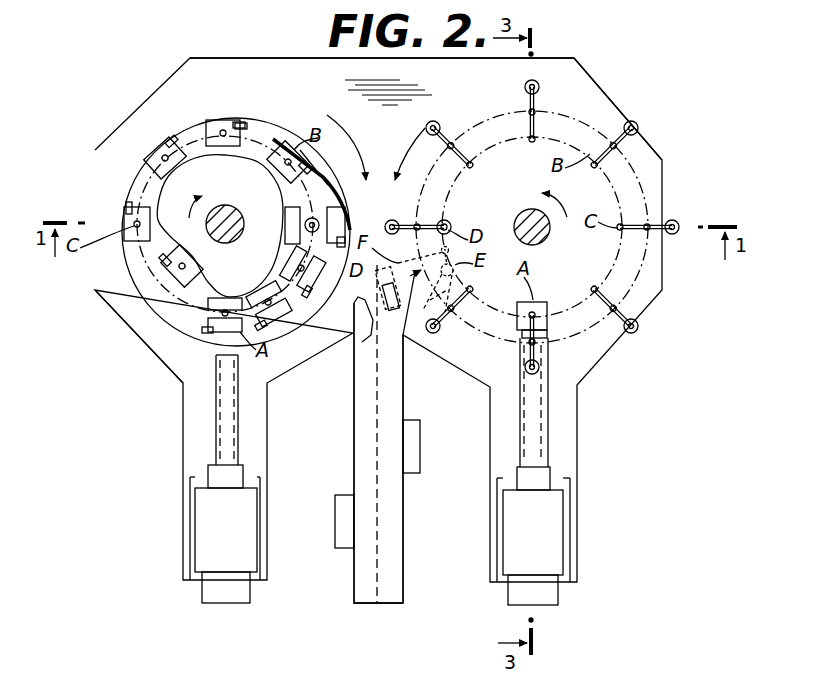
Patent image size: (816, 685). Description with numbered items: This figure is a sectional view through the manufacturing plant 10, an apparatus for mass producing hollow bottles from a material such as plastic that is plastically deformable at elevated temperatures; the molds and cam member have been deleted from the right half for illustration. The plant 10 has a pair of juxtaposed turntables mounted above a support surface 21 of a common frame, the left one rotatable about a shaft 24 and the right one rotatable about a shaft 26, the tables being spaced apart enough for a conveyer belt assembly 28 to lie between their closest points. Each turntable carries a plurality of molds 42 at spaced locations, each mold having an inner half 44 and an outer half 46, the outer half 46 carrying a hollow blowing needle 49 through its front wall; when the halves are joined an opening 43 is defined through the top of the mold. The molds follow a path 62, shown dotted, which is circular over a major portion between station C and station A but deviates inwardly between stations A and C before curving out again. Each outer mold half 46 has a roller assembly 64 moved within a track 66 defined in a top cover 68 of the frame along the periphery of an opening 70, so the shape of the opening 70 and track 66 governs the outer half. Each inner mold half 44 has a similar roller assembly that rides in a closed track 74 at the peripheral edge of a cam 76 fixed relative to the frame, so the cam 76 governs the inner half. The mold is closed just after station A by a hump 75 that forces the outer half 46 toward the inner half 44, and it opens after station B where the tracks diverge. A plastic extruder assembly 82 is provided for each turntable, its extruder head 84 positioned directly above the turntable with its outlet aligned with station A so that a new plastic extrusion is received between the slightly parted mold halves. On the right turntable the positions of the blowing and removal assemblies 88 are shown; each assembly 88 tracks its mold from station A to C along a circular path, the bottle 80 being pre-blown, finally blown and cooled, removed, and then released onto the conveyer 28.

The manufacturing plant 10 is at (672, 95).
The support surface 21 is at (584, 88).
The shaft 24 is at (226, 212).
The shaft 26 is at (519, 218).
The conveyer belt assembly 28 is at (390, 383).
The mold 42 is at (213, 123).
The opening 43 is at (233, 132).
The inner mold half 44 is at (348, 188).
The outer mold half 46 is at (340, 218).
The hollow blowing needle 49 is at (122, 318).
The path 62 is at (284, 128).
The roller assembly 64 is at (152, 160).
The track 66 is at (183, 130).
The top cover 68 is at (382, 43).
The opening 70 is at (330, 168).
The track 74 is at (158, 255).
The hump 75 is at (215, 340).
The cam 76 is at (173, 190).
The bottle 80 is at (357, 340).
The plastic extruder assembly 82 is at (552, 432).
The extruder head 84 is at (517, 322).
The blowing and removal assembly 88 is at (614, 322).